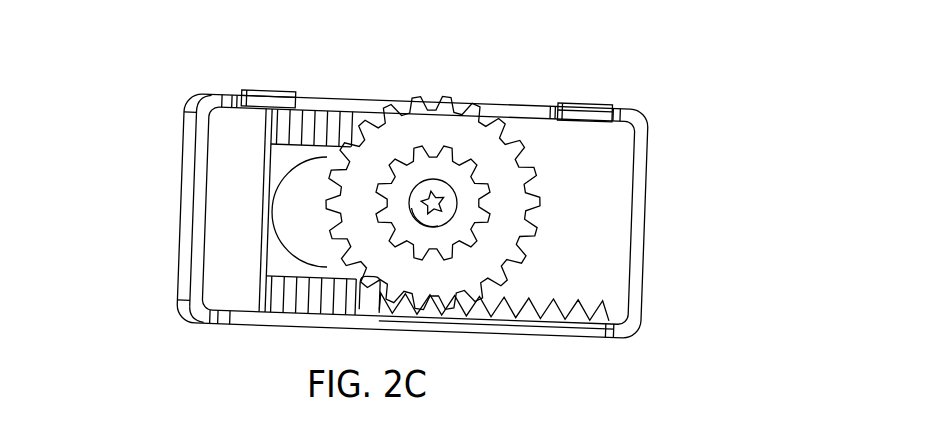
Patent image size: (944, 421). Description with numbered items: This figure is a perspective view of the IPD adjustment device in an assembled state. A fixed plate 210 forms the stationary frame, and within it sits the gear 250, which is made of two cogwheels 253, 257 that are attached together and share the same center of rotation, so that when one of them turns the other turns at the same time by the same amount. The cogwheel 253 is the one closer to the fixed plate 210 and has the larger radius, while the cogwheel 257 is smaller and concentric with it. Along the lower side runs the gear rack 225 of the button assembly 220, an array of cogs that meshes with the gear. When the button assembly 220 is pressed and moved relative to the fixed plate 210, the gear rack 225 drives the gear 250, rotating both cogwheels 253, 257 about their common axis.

The fixed plate 210 is at (197, 203).
The button assembly 220 is at (603, 198).
The gear rack 225 is at (603, 307).
The gear 250 is at (426, 155).
The cogwheel 253 is at (393, 150).
The cogwheel 257 is at (437, 130).